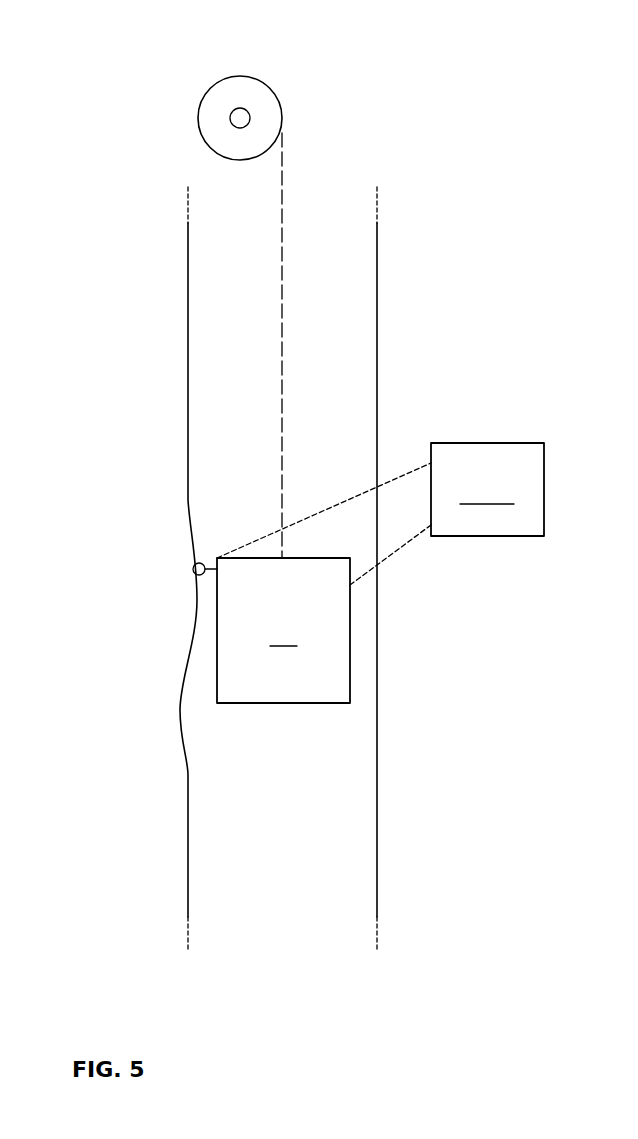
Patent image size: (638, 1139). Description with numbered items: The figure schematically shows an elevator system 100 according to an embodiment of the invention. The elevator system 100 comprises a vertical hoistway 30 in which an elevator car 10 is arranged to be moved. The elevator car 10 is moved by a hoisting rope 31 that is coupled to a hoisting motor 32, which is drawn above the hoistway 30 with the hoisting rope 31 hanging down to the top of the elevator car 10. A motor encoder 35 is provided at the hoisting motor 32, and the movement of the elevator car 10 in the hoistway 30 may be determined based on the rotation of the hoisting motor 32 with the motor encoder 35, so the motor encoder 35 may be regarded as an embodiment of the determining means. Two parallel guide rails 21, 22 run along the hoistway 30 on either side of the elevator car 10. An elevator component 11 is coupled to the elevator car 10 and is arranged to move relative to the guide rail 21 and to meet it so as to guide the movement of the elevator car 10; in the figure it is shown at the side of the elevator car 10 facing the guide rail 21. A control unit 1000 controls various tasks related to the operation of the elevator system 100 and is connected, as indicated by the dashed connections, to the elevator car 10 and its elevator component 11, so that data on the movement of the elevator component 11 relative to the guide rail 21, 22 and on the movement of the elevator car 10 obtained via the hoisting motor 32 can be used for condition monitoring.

The elevator system 100 is at (140, 386).
The hoistway 30 is at (339, 178).
The guide rail 21 is at (185, 675).
The guide rail 22 is at (378, 688).
The hoisting rope 31 is at (281, 500).
The hoisting motor 32 is at (268, 82).
The motor encoder 35 is at (236, 112).
The elevator car 10 is at (283, 630).
The elevator component 11 is at (194, 563).
The control unit 1000 is at (380, 514).